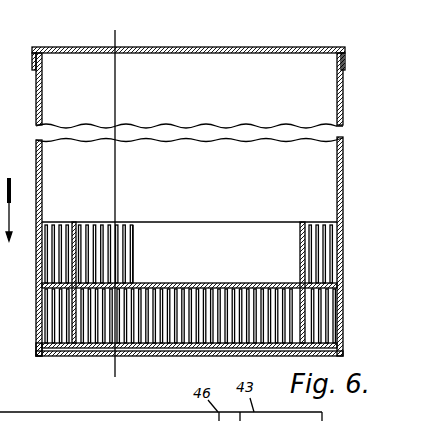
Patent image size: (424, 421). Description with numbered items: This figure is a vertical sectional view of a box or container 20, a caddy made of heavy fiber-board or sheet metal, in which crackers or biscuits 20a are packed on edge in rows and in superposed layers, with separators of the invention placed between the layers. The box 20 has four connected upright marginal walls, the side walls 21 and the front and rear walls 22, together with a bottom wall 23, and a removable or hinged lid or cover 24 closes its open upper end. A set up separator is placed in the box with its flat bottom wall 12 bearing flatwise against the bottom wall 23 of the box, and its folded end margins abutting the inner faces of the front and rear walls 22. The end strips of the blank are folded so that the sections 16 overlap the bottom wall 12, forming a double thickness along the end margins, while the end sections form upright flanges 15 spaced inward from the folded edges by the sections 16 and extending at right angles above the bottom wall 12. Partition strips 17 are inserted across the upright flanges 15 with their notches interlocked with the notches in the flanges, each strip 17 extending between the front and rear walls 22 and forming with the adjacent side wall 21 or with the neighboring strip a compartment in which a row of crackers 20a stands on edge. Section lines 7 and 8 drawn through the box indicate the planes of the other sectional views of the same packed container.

The section line 7- 7 is at (148, 25).
The view direction arrow 8 is at (0, 209).
The bottom wall 12 is at (210, 284).
The upright flange 15 is at (73, 224).
The overlapping section 16 is at (45, 333).
The partition strip 17 is at (192, 230).
The box or container 20 is at (345, 177).
The crackers or biscuits 20a is at (125, 225).
The side wall 21 is at (190, 90).
The front and rear wall 22 is at (367, 245).
The bottom wall of box 23 is at (193, 356).
The lid or cover 24 is at (163, 47).